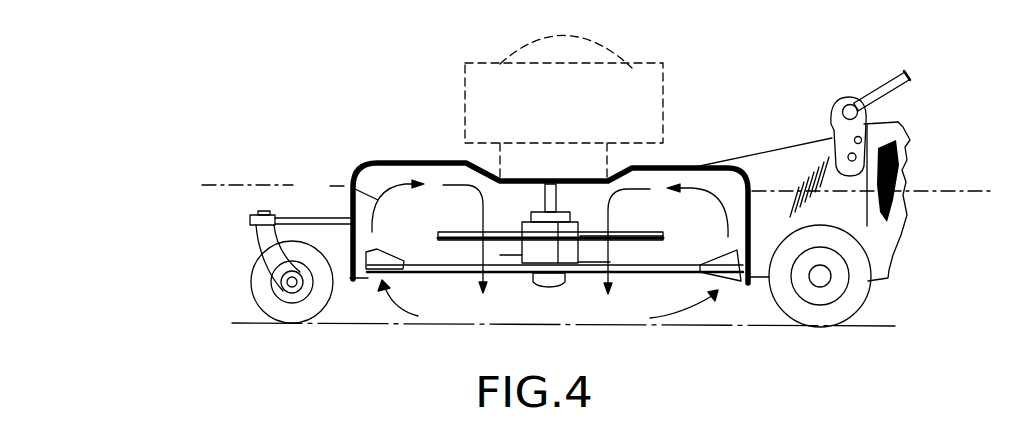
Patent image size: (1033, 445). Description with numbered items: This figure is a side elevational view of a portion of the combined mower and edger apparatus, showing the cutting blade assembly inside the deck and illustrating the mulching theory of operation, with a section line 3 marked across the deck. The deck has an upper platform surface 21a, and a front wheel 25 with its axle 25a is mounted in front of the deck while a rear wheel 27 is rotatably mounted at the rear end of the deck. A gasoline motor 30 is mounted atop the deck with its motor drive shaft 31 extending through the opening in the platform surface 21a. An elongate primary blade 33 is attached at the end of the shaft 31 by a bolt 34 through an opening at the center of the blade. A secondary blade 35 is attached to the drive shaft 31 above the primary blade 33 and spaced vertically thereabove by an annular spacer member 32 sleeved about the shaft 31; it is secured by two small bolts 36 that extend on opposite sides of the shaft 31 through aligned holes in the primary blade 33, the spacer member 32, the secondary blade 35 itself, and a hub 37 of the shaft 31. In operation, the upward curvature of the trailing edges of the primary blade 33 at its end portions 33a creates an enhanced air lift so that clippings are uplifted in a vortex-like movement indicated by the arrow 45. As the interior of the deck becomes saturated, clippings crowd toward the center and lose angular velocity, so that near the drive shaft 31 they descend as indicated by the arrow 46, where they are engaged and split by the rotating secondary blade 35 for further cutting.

The section line 3- 3 is at (212, 176).
The upper platform surface 21a is at (420, 161).
The front wheel 25 is at (251, 262).
The caster wheel axle 25a is at (286, 283).
The rear wheel 27 is at (868, 299).
The gasoline motor 30 is at (617, 47).
The motor drive shaft 31 is at (548, 184).
The annular spacer member 32 is at (521, 250).
The primary blade 33 is at (440, 273).
The end portions of the primary blade 33a is at (381, 250).
The bolt 34 is at (552, 287).
The secondary blade 35 is at (643, 242).
The small bolts 36 is at (578, 276).
The hub 37 is at (532, 216).
The arrow 45 is at (349, 187).
The arrow 46 is at (485, 298).